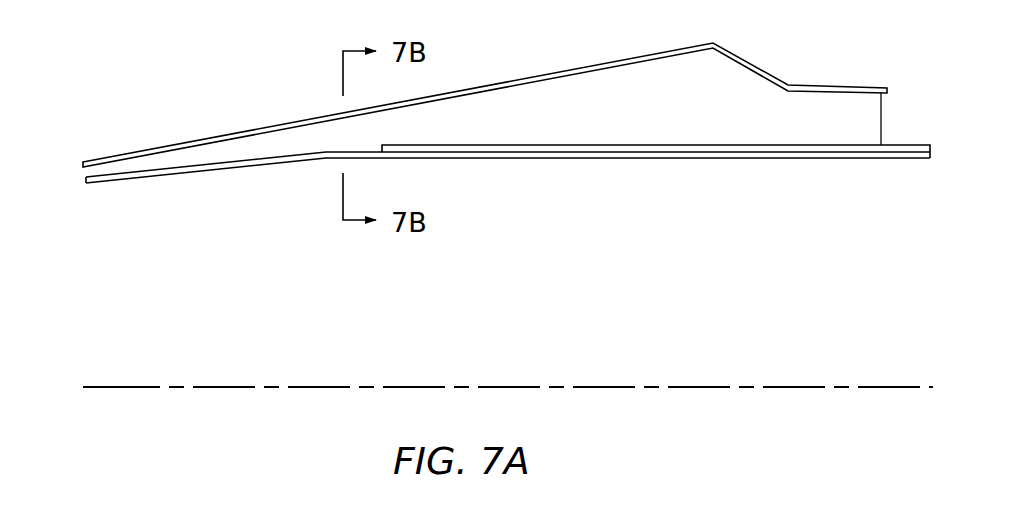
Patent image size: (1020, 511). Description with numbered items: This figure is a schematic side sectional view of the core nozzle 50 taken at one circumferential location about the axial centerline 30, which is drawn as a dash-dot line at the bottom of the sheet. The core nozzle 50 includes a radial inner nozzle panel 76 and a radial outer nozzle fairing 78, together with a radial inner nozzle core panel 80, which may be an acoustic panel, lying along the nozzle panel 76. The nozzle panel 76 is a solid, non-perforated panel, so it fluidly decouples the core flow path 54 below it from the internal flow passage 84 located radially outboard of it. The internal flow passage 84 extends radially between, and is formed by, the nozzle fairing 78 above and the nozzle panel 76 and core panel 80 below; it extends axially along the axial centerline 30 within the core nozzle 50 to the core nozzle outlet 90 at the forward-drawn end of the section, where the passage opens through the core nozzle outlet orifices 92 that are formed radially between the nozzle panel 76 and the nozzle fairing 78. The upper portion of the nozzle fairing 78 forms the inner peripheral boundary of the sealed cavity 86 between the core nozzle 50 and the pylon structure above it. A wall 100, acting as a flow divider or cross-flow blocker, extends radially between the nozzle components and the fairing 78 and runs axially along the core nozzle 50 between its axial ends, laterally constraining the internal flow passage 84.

The core nozzle 50 is at (190, 70).
The radial outer nozzle fairing 78 is at (514, 82).
The cavity 86 is at (310, 85).
The internal flow passage 84 is at (654, 119).
The radial inner nozzle panel 76 is at (250, 163).
The radial inner nozzle core panel 80 is at (633, 158).
The wall 100 is at (171, 158).
The core nozzle outlet 90 is at (54, 223).
The core nozzle outlet orifice 92 is at (70, 181).
The core flow path 54 is at (355, 317).
The axial centerline 30 is at (910, 385).